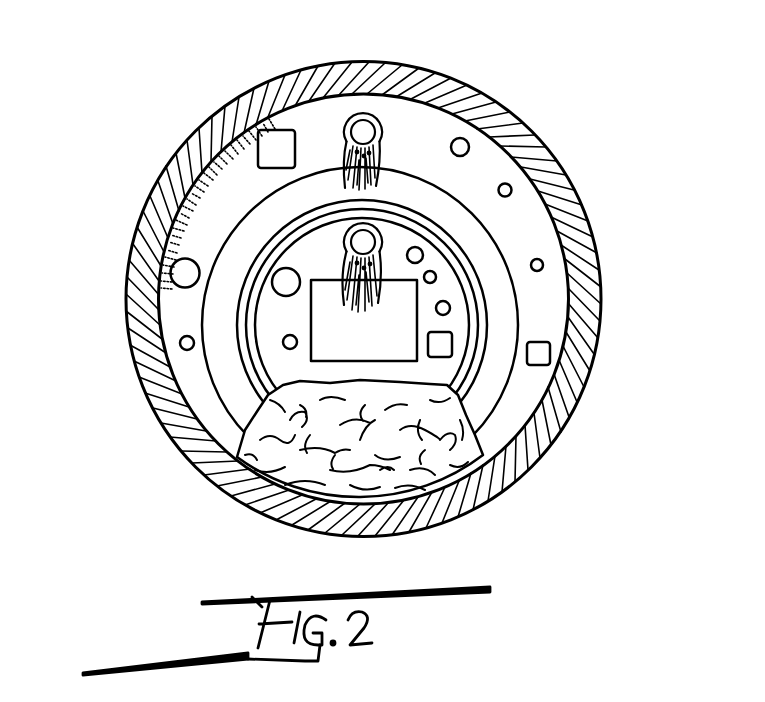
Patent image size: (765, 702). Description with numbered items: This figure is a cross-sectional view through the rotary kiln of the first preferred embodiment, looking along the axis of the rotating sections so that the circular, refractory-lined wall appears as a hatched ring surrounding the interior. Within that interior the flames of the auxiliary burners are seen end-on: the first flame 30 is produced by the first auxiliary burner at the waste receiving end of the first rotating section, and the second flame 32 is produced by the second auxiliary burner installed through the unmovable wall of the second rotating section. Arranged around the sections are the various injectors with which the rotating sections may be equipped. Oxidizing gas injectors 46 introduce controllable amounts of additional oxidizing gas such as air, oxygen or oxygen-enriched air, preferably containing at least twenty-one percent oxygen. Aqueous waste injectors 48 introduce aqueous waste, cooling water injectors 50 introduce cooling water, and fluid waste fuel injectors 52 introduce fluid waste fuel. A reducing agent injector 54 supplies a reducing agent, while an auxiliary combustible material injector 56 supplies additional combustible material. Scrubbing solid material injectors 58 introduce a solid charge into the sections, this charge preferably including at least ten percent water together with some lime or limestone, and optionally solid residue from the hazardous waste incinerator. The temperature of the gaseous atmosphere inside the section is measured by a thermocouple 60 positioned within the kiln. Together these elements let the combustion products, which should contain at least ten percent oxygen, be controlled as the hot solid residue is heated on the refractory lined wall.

The first flame 30 is at (372, 280).
The second flame 32 is at (379, 118).
The oxidizing gas injectors 46 is at (274, 277).
The aqueous waste injectors 48 is at (283, 340).
The cooling water injectors 50 is at (542, 262).
The fluid waste fuel injectors 52 is at (421, 249).
The reducing agent injector 54 is at (450, 307).
The auxiliary combustible material injector 56 is at (262, 130).
The scrubbing solid material injectors 58 is at (551, 347).
The thermocouple 60 is at (510, 185).